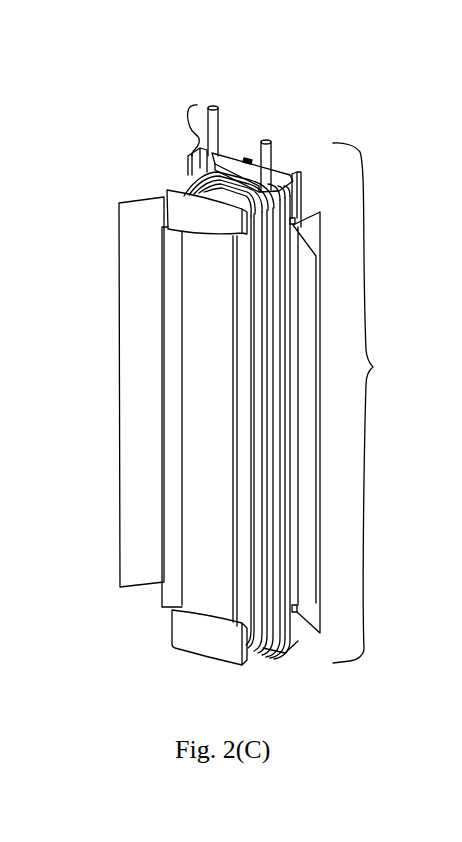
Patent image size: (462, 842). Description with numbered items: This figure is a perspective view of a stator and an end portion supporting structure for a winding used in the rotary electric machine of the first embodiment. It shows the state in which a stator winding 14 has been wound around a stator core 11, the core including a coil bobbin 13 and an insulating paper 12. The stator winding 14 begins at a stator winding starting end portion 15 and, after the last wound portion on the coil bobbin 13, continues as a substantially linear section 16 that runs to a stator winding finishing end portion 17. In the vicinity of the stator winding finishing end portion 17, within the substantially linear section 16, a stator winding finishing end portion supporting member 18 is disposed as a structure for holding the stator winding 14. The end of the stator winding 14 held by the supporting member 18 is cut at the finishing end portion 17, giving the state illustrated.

The stator core 11 is at (200, 280).
The insulating paper 12 is at (133, 310).
The coil bobbin 13 is at (233, 157).
The stator winding 14 is at (187, 177).
The stator winding starting end portion 15 is at (196, 159).
The substantially linear section 16 is at (378, 403).
The stator winding finishing end portion 17 is at (289, 143).
The stator winding finishing end portion supporting member 18 is at (285, 173).